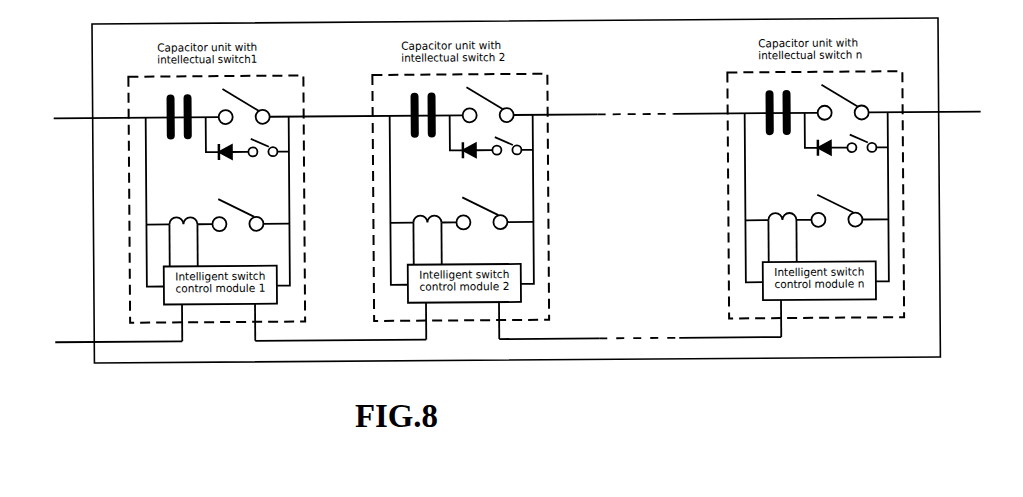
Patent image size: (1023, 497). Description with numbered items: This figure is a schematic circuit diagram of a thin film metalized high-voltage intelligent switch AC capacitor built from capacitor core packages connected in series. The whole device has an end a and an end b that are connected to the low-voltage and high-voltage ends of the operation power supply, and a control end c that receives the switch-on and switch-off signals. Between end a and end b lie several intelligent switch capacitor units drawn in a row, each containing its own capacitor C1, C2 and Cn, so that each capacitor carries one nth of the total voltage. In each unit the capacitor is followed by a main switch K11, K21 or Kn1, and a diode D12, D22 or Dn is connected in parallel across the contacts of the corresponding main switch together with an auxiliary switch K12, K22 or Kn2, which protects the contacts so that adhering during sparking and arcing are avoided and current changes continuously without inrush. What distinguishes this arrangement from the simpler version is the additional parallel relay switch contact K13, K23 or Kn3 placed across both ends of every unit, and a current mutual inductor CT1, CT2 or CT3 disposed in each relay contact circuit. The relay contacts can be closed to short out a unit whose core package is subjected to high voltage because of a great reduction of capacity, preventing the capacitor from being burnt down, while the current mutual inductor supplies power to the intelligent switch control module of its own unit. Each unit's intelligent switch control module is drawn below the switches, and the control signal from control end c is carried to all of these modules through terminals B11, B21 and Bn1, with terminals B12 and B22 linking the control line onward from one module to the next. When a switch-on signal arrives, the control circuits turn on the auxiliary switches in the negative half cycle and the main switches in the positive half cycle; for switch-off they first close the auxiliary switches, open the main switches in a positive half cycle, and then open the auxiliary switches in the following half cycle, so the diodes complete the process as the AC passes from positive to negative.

The end a is at (135, 108).
The end b is at (924, 101).
The control end c is at (117, 332).
The capacitor C1 is at (191, 108).
The switch K11 is at (248, 102).
The diode D12 is at (226, 162).
The auxiliary switch K12 is at (263, 159).
The current mutual inductor CT1 is at (182, 229).
The parallel relay switch contact K13 is at (243, 211).
The control terminal B11 is at (181, 317).
The control terminal B12 is at (255, 317).
The capacitor C2 is at (435, 106).
The switch K21 is at (492, 100).
The diode D22 is at (470, 160).
The auxiliary switch K22 is at (507, 157).
The current mutual inductor CT2 is at (426, 228).
The parallel relay switch contact K23 is at (487, 209).
The control terminal B21 is at (425, 316).
The control terminal B22 is at (499, 315).
The capacitor Cn is at (791, 104).
The switch Kn1 is at (848, 97).
The diode Dn is at (824, 158).
The auxiliary switch Kn2 is at (863, 154).
The current mutual inductor CT3 is at (781, 225).
The parallel relay switch contact Kn3 is at (843, 206).
The control terminal Bn1 is at (780, 313).